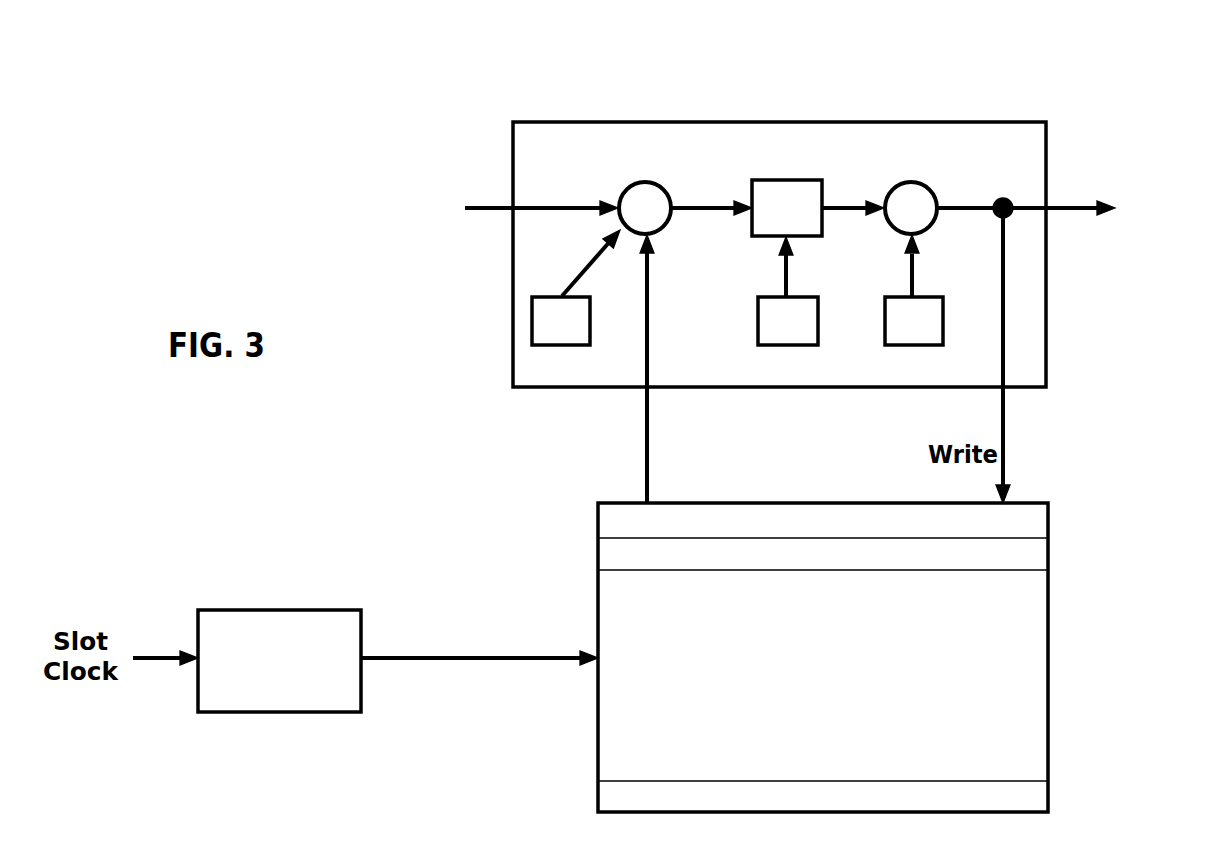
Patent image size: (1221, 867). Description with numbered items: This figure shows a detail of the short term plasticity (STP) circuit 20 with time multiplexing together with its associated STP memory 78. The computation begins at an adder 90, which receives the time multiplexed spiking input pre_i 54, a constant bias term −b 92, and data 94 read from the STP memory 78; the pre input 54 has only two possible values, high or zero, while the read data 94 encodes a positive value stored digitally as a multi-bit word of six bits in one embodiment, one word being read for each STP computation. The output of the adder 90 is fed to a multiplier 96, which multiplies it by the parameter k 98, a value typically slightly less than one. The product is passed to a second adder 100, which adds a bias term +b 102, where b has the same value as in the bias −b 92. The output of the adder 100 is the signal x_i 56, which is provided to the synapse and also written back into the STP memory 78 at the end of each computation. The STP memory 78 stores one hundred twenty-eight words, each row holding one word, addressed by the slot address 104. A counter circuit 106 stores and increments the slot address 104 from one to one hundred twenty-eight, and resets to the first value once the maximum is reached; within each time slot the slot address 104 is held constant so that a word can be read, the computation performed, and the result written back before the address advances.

The STP circuit 20 is at (959, 118).
The time multiplexed pre input 54 is at (465, 212).
The output signal x_i 56 is at (1070, 208).
The STP memory 78 is at (1020, 648).
The adder 90 is at (616, 203).
The bias term −b 92 is at (532, 328).
The data read from STP memory 94 is at (649, 458).
The multiplier 96 is at (750, 190).
The parameter k 98 is at (797, 338).
The adder 100 is at (927, 205).
The bias term +b 102 is at (927, 317).
The slot address 104 is at (377, 653).
The counter circuit 106 is at (255, 623).